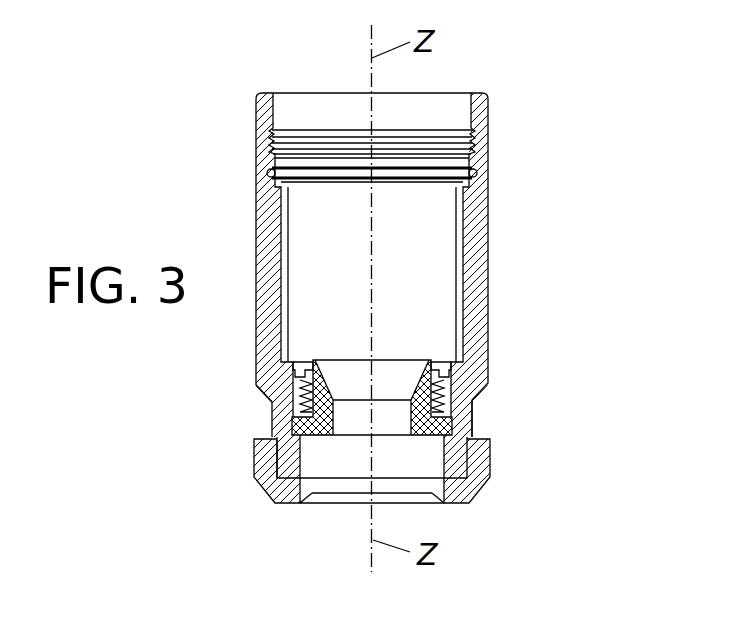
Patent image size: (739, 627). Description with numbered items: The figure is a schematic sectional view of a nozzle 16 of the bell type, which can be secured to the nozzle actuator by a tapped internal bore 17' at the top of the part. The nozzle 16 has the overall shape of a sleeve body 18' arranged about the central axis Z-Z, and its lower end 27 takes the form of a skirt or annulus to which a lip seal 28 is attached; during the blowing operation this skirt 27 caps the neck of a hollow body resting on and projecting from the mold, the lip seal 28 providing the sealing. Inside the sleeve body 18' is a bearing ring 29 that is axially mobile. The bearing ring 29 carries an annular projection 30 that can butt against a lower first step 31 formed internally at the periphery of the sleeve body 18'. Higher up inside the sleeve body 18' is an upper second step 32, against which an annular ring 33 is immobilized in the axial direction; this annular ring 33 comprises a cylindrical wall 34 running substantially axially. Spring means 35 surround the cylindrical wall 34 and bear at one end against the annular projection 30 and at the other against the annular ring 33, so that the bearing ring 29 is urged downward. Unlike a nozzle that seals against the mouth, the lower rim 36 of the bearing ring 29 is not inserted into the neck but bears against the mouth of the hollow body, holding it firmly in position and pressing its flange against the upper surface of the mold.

The nozzle of the bell type 16 is at (545, 258).
The tapped internal bore 17' is at (417, 121).
The sleeve body 18' is at (413, 285).
The lower end 27 is at (484, 485).
The lip seal 28 is at (302, 505).
The bearing ring 29 is at (460, 372).
The annular projection 30 is at (474, 423).
The lower first step 31 is at (270, 455).
The upper second step 32 is at (263, 388).
The annular ring 33 is at (308, 364).
The cylindrical wall 34 is at (300, 397).
The spring means 35 is at (452, 393).
The lower rim 36 is at (474, 400).